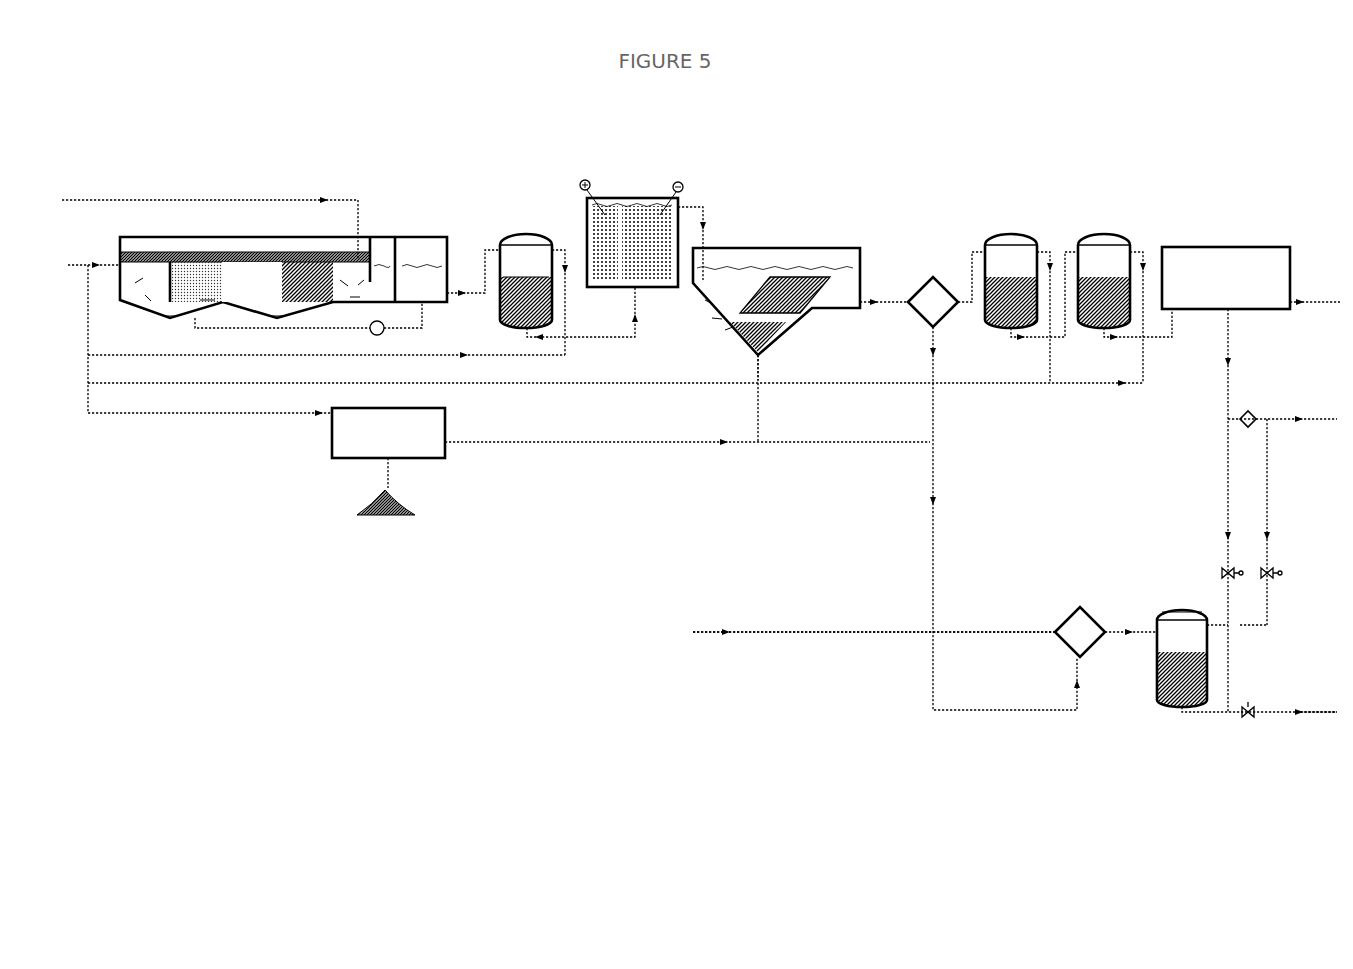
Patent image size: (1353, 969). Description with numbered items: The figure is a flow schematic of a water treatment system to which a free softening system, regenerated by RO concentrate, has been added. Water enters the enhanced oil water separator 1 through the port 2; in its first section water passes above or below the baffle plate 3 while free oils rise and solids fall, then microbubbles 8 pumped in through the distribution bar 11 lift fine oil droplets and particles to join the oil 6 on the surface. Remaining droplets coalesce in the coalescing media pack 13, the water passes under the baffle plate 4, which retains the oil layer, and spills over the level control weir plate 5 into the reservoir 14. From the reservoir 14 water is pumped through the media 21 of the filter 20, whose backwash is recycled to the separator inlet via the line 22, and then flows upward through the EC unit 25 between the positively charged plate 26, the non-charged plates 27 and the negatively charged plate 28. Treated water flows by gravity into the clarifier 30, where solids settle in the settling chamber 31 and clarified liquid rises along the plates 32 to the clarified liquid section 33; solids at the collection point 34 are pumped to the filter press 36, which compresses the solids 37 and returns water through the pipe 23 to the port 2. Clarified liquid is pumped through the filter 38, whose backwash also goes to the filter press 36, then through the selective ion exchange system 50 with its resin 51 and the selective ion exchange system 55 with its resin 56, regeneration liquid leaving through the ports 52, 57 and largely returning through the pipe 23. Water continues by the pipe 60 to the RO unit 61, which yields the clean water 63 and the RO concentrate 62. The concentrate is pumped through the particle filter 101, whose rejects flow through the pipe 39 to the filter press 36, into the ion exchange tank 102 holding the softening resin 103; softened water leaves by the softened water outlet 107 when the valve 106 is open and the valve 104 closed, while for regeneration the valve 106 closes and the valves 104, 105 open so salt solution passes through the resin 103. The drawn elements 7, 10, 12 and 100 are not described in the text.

The enhanced oil water separator 1 is at (192, 238).
The port 2 is at (96, 258).
The baffle plate 3 is at (148, 252).
The baffle plate 4 is at (370, 245).
The level control weir plate 5 is at (397, 254).
The oil 6 is at (256, 262).
The recirculation line 7 is at (192, 202).
The microbubbles 8 is at (226, 262).
The sludge hopper 10 is at (172, 318).
The distribution bar 11 is at (208, 296).
The recirculation pump 12 is at (370, 332).
The coalescing media pack 13 is at (290, 305).
The reservoir 14 is at (441, 252).
The filter 20 is at (524, 237).
The media 21 is at (538, 264).
The line 22 is at (560, 252).
The pipe 23 is at (122, 358).
The EC unit 25 is at (586, 238).
The positively charged plate 26 is at (613, 197).
The non-charged plates 27 is at (637, 205).
The negatively charged plate 28 is at (680, 192).
The clarifier 30 is at (732, 258).
The settling chamber 31 is at (755, 266).
The plates 32 is at (780, 263).
The clarified liquid section 33 is at (850, 265).
The collection point 34 is at (773, 345).
The filter press 36 is at (345, 458).
The solids 37 is at (400, 492).
The filter 38 is at (942, 282).
The pipe 39 is at (672, 443).
The selective ion exchange system 50 is at (1010, 235).
The resin 51 is at (1022, 264).
The port 52 is at (1046, 262).
The selective ion exchange system 55 is at (1107, 235).
The resin 56 is at (1118, 262).
The port 57 is at (1141, 262).
The pipe 60 is at (1168, 342).
The RO unit 61 is at (1205, 256).
The RO concentrate 62 is at (1325, 417).
The clean water 63 is at (1320, 298).
The supply line 100 is at (820, 630).
The particle filter 101 is at (1090, 617).
The ion exchange tank 102 is at (1185, 650).
The softening resin 103 is at (1190, 612).
The valve 104 is at (1222, 573).
The valve 105 is at (1280, 574).
The valve 106 is at (1250, 705).
The softened water outlet 107 is at (1300, 712).